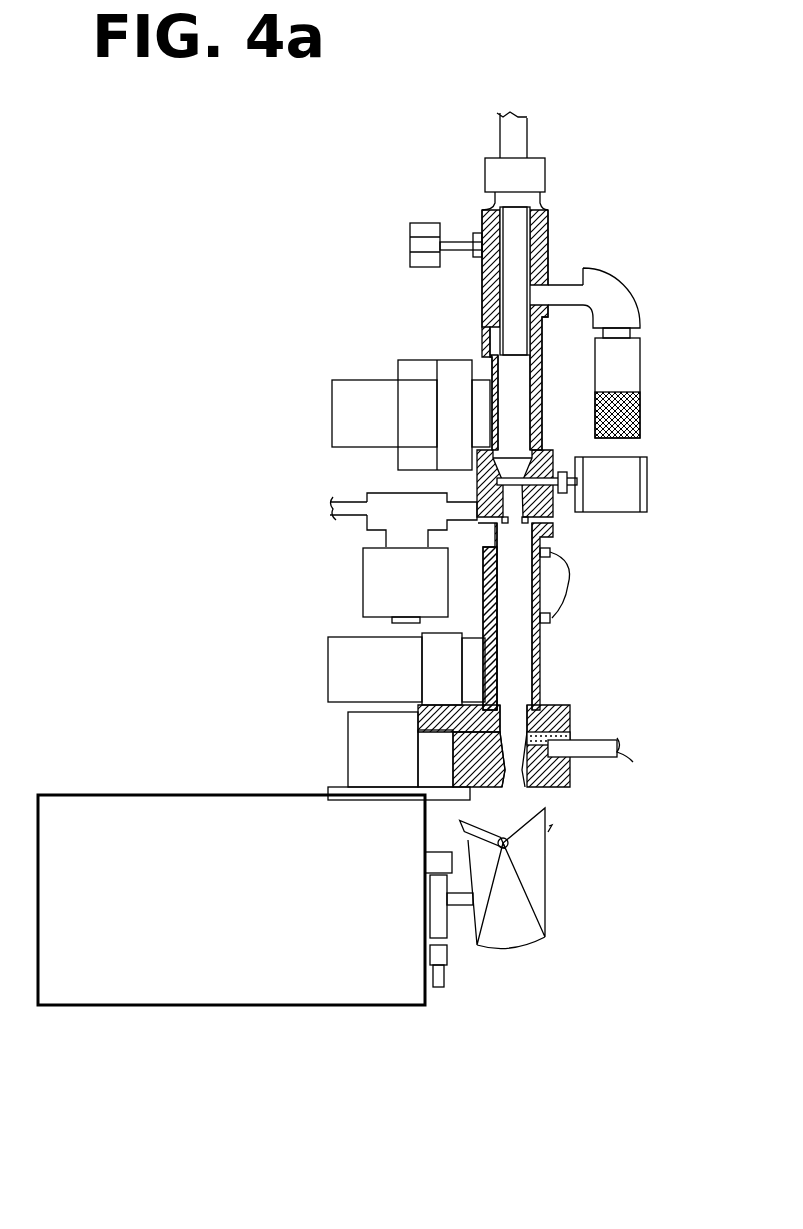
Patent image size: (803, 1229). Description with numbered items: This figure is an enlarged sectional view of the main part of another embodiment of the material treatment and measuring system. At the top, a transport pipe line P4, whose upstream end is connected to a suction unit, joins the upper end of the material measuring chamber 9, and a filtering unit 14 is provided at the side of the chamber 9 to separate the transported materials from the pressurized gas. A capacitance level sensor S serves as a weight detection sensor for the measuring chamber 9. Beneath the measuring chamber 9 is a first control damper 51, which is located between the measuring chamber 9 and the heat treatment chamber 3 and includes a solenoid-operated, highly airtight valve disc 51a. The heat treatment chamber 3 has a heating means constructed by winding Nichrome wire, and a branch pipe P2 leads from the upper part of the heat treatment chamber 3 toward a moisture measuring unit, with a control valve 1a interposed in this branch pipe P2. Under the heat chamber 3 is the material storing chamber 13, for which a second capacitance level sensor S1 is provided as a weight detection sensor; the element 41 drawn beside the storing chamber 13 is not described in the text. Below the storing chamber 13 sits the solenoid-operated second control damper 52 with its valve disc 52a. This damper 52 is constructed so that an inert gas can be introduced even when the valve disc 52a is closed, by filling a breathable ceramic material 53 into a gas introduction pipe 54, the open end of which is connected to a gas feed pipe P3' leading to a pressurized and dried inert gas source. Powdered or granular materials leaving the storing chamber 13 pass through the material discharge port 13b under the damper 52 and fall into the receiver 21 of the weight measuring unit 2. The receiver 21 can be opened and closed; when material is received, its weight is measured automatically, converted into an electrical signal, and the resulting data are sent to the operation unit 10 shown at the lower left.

The transport pipe line P4 is at (520, 145).
The material measuring chamber 9 is at (508, 388).
The filtering unit 14 is at (627, 367).
The capacitance level sensor S is at (372, 398).
The valve disc 51a is at (477, 484).
The first control damper 51 is at (630, 492).
The branch pipe P2 is at (330, 509).
The control valve 1a is at (380, 577).
The heat treatment chamber 3 is at (510, 577).
The heater 41 is at (573, 585).
The material storing chamber 13 is at (517, 663).
The capacitance level sensor S1 is at (358, 666).
The second control damper 52 is at (372, 742).
The breathable ceramic material 53 is at (553, 713).
The gas introduction pipe 54 is at (550, 745).
The gas feed pipe P3' is at (612, 760).
The material discharge port 13b is at (520, 775).
The valve disc 52a is at (500, 783).
The operation unit 10 is at (260, 992).
The receiver 21 is at (538, 895).
The weight measuring unit 2 is at (463, 950).